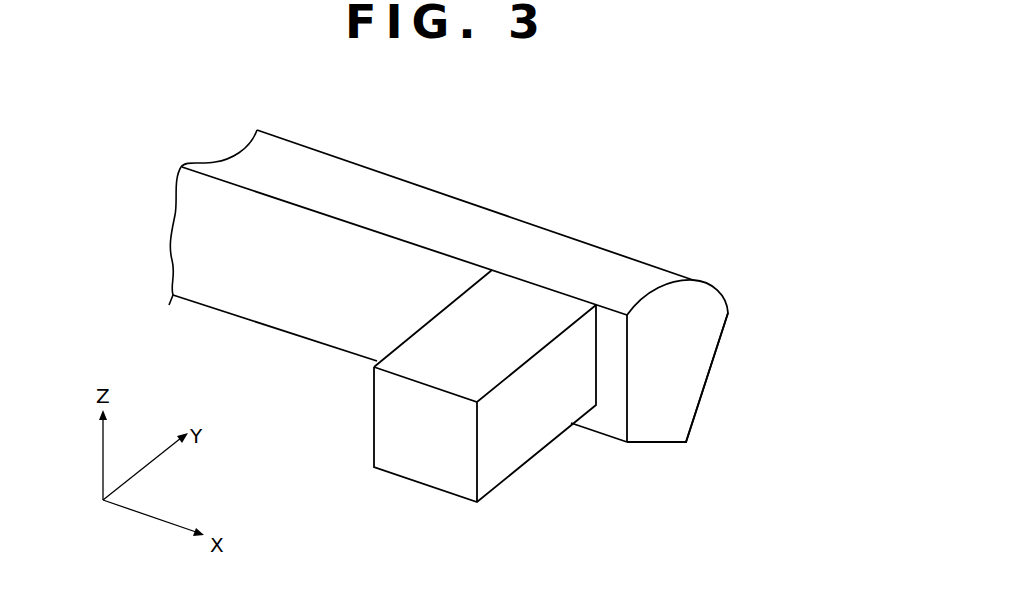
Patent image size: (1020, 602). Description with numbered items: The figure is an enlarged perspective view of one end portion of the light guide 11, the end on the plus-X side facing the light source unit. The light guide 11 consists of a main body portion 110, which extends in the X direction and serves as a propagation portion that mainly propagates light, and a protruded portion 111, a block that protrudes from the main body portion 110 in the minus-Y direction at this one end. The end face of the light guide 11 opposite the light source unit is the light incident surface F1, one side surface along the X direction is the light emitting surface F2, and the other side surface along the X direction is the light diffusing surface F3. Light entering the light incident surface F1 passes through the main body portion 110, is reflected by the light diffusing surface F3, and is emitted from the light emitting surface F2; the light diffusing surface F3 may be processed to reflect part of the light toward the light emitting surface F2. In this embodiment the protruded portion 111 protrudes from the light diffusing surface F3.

The light guide 11 is at (446, 284).
The main body portion 110 is at (719, 338).
The protruded portion 111 is at (528, 438).
The light incident surface F1 is at (690, 358).
The light emitting surface F2 is at (590, 267).
The light diffusing surface F3 is at (268, 287).